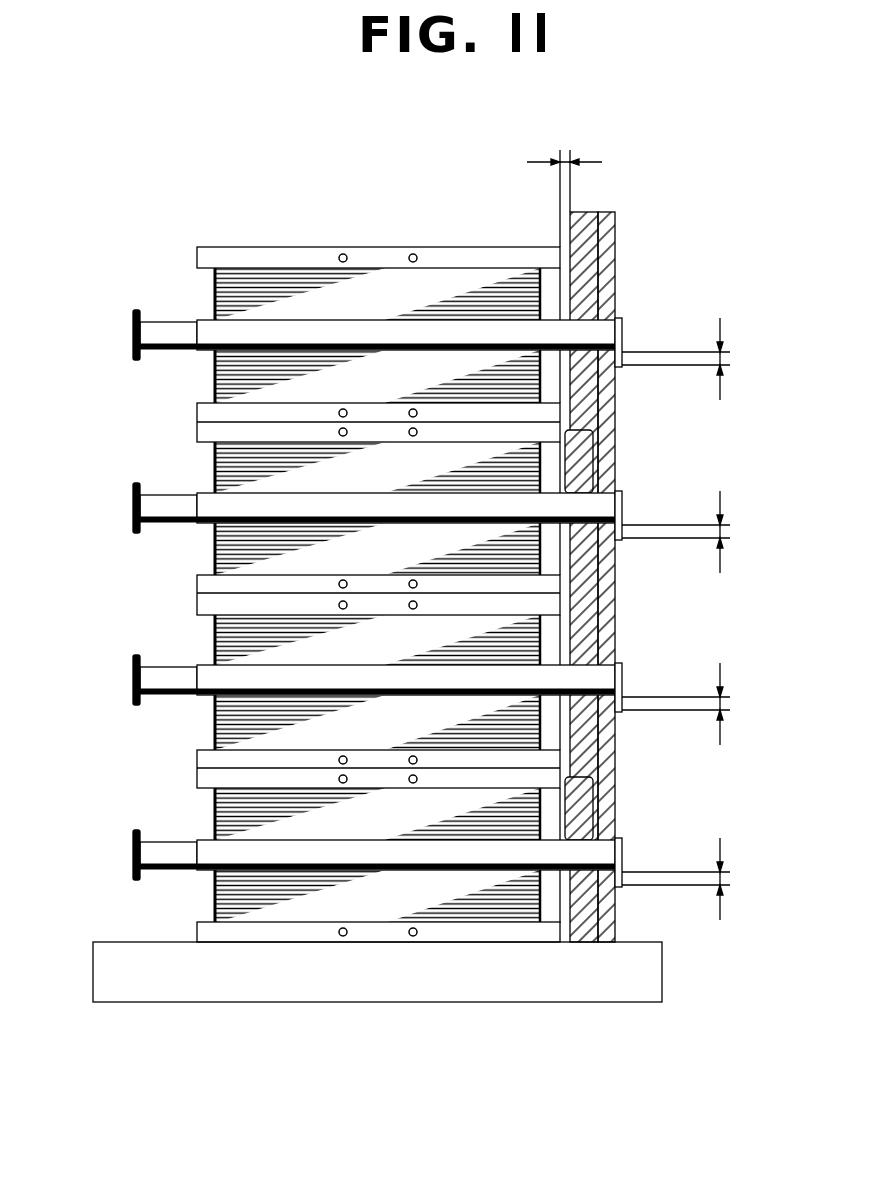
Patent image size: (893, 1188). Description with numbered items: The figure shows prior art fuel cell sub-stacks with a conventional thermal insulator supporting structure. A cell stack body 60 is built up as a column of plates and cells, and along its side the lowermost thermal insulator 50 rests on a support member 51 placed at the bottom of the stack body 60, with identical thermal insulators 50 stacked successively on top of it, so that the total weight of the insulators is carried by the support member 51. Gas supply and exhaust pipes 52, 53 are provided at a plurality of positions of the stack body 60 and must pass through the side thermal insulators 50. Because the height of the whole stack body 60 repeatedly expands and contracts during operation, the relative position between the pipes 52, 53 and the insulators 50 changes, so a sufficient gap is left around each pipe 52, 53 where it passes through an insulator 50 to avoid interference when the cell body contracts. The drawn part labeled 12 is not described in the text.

The support plate 12 is at (613, 292).
The thermal insulator 50 is at (585, 458).
The support member 51 is at (622, 997).
The gas supply pipe 52 is at (350, 409).
The gas exhaust pipe 53 is at (612, 650).
The stack body 60 is at (128, 620).